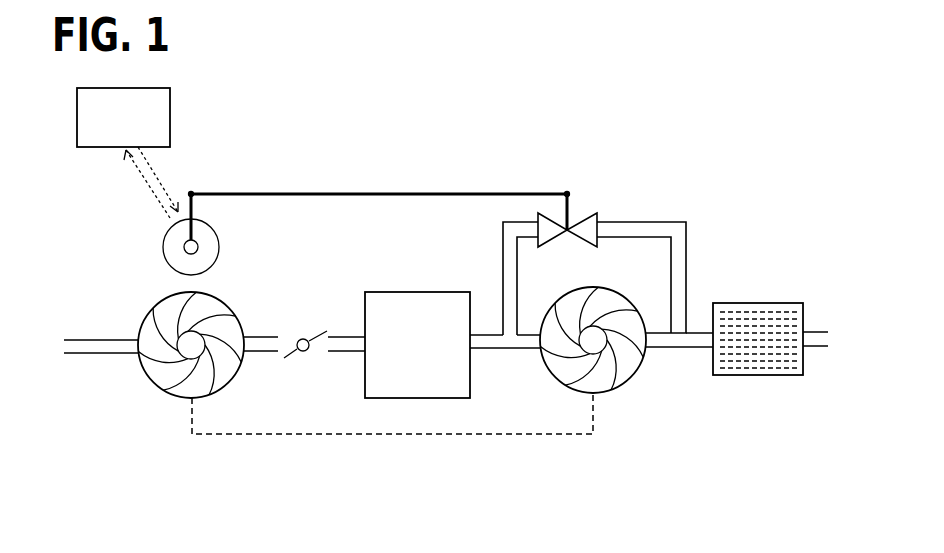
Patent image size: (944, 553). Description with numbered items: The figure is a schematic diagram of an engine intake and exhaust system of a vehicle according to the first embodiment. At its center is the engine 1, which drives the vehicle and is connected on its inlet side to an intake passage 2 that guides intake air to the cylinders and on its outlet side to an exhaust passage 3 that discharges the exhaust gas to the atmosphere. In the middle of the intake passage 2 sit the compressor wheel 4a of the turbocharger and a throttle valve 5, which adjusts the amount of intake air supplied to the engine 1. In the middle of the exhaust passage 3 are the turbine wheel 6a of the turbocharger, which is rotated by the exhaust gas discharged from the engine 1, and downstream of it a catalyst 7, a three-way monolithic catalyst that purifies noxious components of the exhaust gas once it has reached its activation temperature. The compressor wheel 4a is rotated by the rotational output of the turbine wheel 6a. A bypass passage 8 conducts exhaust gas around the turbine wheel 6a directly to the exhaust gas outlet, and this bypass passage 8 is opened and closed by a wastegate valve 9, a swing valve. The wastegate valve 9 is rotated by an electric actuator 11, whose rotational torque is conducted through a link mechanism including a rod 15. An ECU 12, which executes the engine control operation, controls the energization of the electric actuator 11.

The engine 1 is at (410, 292).
The intake passage 2 is at (93, 355).
The exhaust passage 3 is at (818, 347).
The compressor wheel 4a is at (165, 394).
The throttle valve 5 is at (305, 310).
The turbine wheel 6a is at (632, 367).
The catalyst 7 is at (770, 303).
The bypass passage 8 is at (652, 222).
The wastegate valve 9 is at (583, 213).
The electric actuator 11 is at (163, 250).
The ECU 12 is at (170, 110).
The rod 15 is at (338, 194).